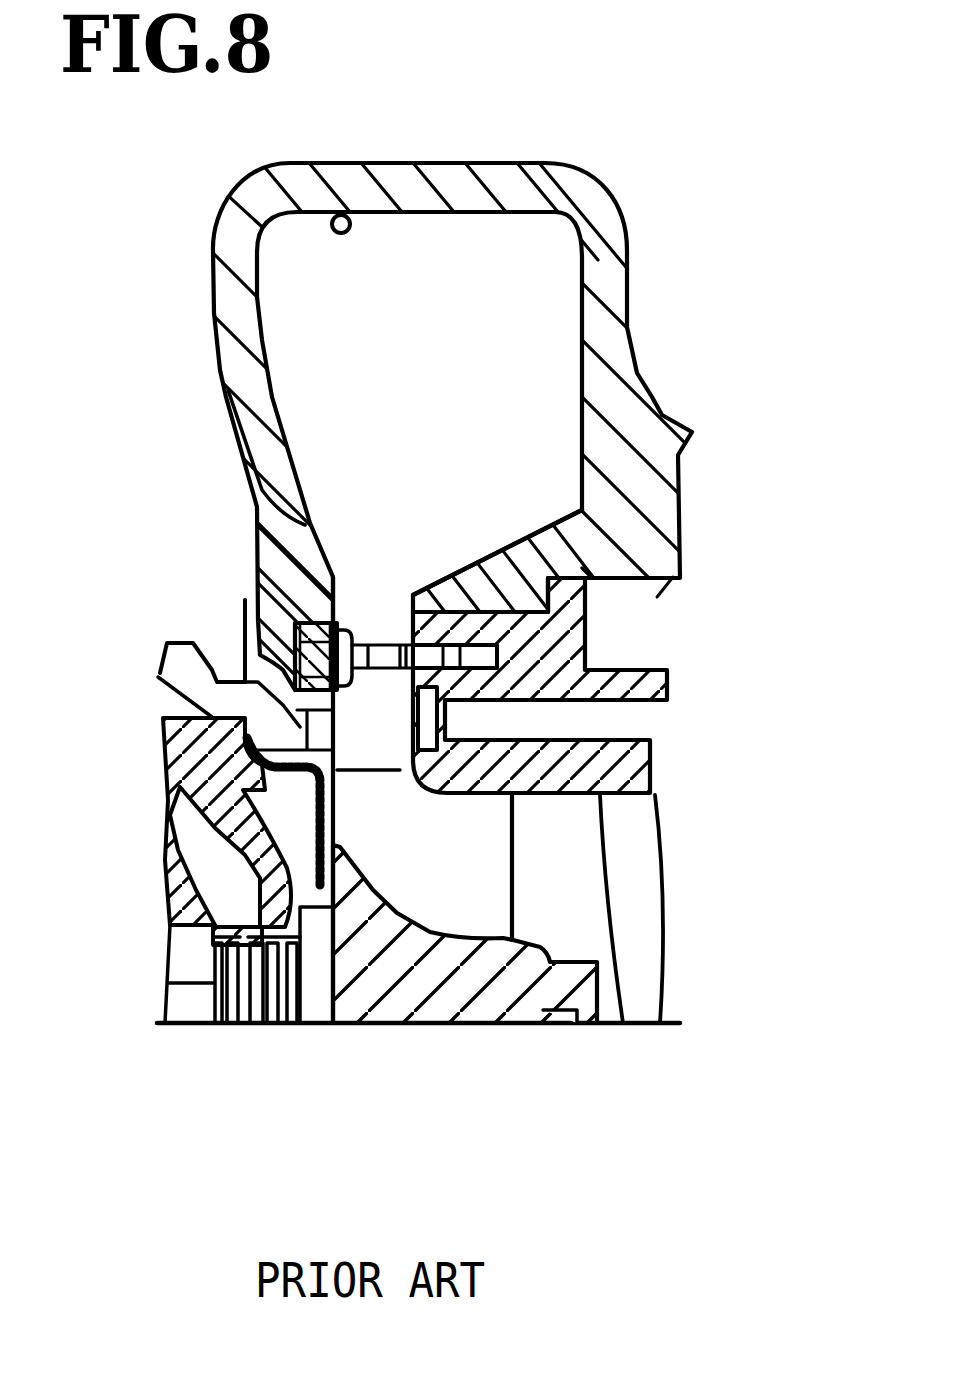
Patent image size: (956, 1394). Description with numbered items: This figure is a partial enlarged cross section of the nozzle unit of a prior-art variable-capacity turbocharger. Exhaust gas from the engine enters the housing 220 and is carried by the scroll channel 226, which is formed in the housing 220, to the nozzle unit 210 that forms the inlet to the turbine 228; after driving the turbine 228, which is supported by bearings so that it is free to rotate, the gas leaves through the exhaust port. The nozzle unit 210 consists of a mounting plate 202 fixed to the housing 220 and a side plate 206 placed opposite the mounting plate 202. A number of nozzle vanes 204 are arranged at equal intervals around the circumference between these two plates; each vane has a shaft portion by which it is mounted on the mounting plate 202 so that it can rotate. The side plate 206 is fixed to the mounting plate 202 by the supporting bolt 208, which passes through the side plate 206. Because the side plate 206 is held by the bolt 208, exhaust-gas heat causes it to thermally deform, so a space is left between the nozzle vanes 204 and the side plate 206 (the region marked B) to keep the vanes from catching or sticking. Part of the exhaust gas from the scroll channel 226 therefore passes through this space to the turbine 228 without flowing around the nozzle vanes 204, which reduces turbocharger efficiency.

The mounting plate 202 is at (643, 1030).
The nozzle vanes 204 is at (388, 720).
The side plate 206 is at (260, 680).
The supporting bolt 208 is at (380, 622).
The nozzle unit 210 is at (400, 575).
The housing 220 is at (607, 200).
The scroll channel 226 is at (346, 216).
The turbine 228 is at (462, 987).
The bent portion B is at (258, 505).